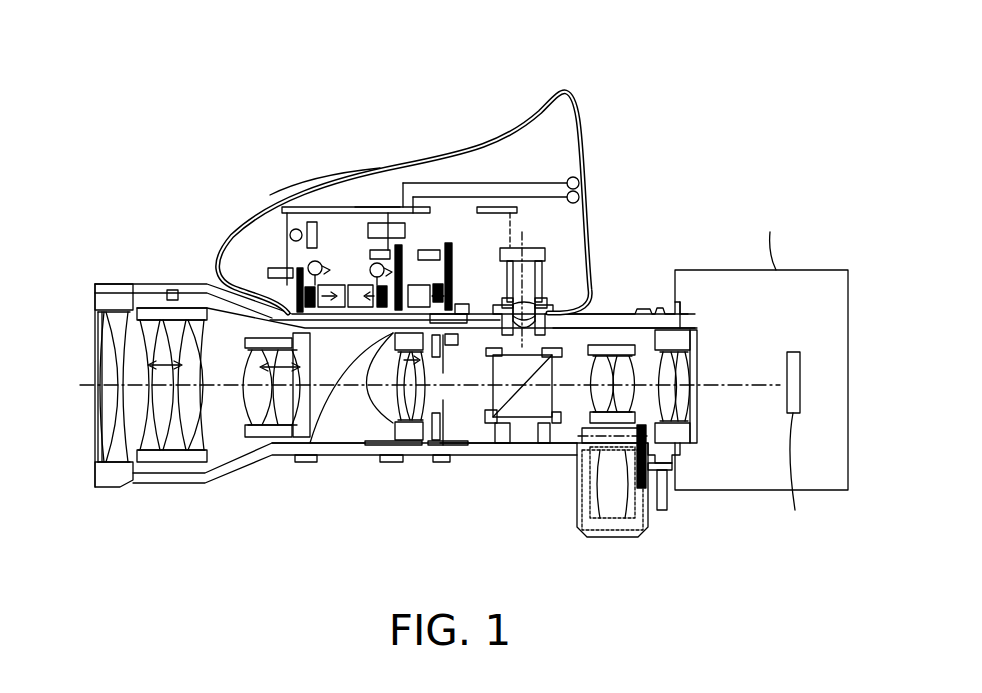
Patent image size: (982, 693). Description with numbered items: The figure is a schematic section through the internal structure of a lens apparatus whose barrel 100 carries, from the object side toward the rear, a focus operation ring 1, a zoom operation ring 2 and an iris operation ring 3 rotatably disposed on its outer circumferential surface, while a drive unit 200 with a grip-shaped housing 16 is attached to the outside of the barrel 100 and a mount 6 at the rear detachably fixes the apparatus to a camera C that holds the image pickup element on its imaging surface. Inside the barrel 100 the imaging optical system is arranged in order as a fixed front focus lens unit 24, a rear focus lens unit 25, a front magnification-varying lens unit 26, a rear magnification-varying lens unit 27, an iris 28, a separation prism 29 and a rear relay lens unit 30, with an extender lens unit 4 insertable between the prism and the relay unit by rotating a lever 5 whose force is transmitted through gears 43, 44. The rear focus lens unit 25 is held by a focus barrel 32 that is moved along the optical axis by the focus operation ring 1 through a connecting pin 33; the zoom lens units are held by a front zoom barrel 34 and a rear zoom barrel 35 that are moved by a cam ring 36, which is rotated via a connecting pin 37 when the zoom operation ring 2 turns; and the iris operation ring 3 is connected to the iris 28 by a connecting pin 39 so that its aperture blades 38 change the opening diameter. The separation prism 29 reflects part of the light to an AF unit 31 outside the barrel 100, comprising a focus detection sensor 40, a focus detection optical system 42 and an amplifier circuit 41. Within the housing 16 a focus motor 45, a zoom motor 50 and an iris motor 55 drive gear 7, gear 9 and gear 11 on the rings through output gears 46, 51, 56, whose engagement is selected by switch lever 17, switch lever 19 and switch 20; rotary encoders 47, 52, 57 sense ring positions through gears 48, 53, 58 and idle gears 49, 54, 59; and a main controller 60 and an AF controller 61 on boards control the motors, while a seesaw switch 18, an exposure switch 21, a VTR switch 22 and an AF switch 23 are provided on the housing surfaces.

The focus operation ring 1 is at (187, 482).
The zoom operation ring 2 is at (375, 447).
The iris operation ring 3 is at (441, 432).
The extender lens unit 4 is at (588, 533).
The lever 5 is at (663, 512).
The mount 6 is at (680, 445).
The gear 7 is at (306, 463).
The gear 9 is at (396, 463).
The gear 11 is at (448, 463).
The housing 16 is at (580, 181).
The switch lever 17 is at (290, 250).
The seesaw switch 18 is at (386, 223).
The switch lever 19 is at (356, 208).
The switch 20 is at (283, 208).
The exposure switch 21 is at (300, 230).
The VTR switch 22 is at (540, 250).
The AF switch 23 is at (583, 199).
The front focus lens unit 24 is at (97, 483).
The rear focus lens unit 25 is at (157, 452).
The front magnification-varying lens unit 26 is at (270, 443).
The rear magnification-varying lens unit 27 is at (409, 441).
The iris 28 is at (440, 463).
The separation prism 29 is at (520, 432).
The rear relay lens unit 30 is at (690, 447).
The AF unit 31 is at (645, 310).
The focus barrel 32 is at (148, 305).
The connecting pin 33 is at (172, 292).
The front zoom barrel 34 is at (288, 430).
The rear zoom barrel 35 is at (414, 441).
The cam ring 36 is at (336, 456).
The connecting pin 37 is at (347, 440).
The aperture blades 38 is at (448, 427).
The connecting pin 39 is at (496, 306).
The focus detection sensor 40 is at (546, 300).
The amplifier circuit 41 is at (541, 272).
The focus detection optical system 42 is at (600, 315).
The gear 43 is at (642, 485).
The gear 44 is at (620, 462).
The focus motor 45 is at (313, 260).
The gear 46 is at (268, 273).
The rotary encoder 47 is at (298, 298).
The gear 48 is at (305, 292).
The idle gear 49 is at (330, 306).
The zoom motor 50 is at (352, 286).
The gear 51 is at (374, 265).
The rotary encoder 52 is at (378, 250).
The gear 53 is at (399, 260).
The idle gear 54 is at (420, 285).
The iris motor 55 is at (432, 250).
The gear 56 is at (450, 262).
The rotary encoder 57 is at (440, 286).
The gear 58 is at (462, 314).
The idle gear 59 is at (470, 306).
The main controller 60 is at (277, 193).
The AF controller 61 is at (511, 235).
The barrel 100 is at (679, 278).
The drive unit 200 is at (581, 127).
The camera C is at (768, 239).